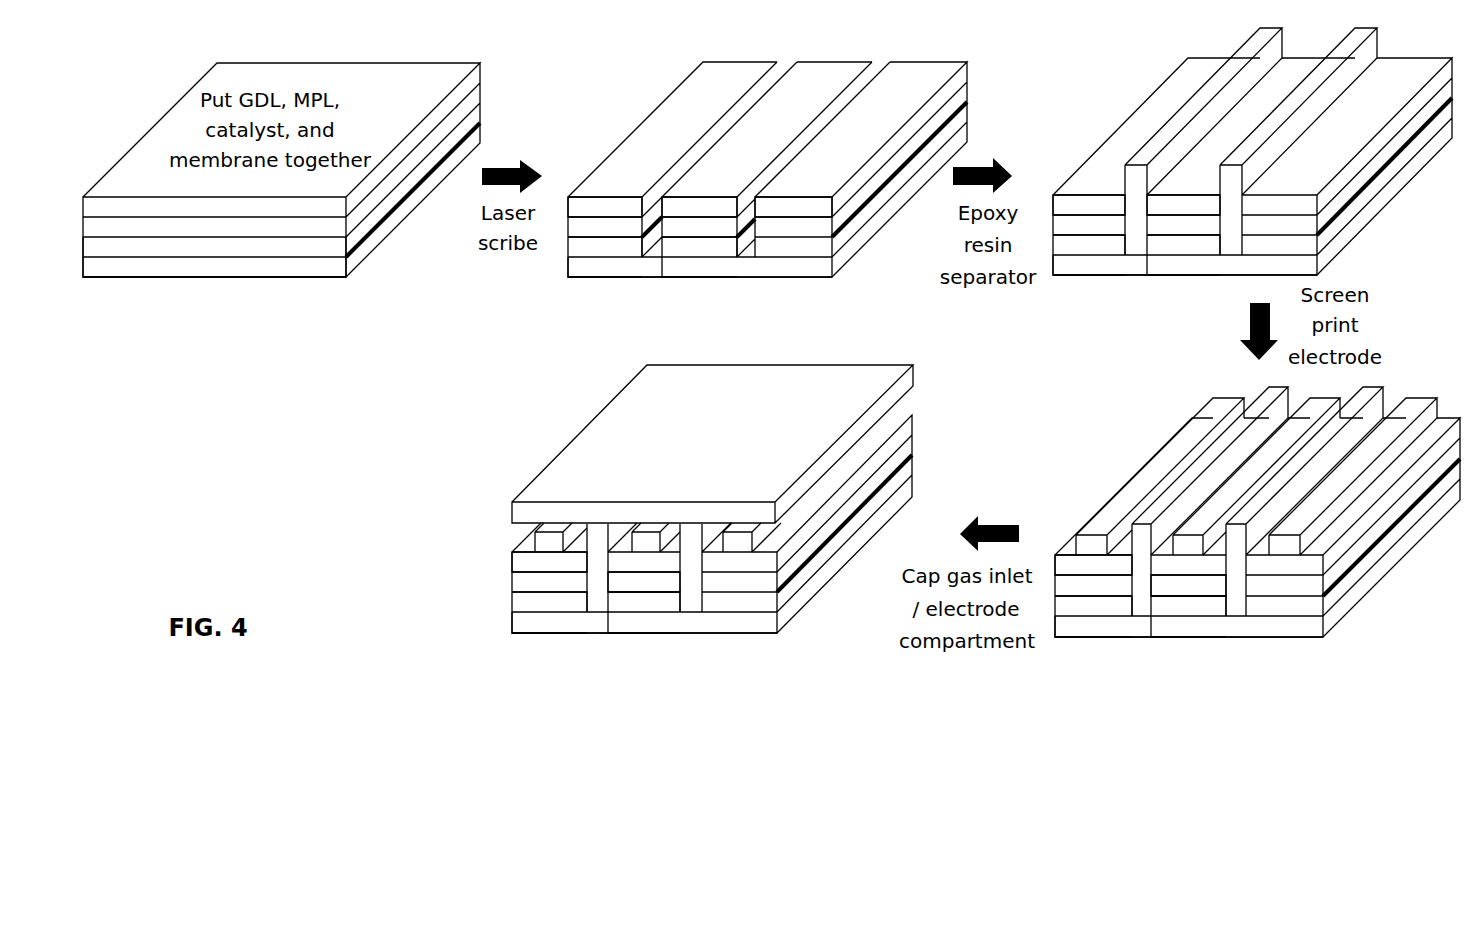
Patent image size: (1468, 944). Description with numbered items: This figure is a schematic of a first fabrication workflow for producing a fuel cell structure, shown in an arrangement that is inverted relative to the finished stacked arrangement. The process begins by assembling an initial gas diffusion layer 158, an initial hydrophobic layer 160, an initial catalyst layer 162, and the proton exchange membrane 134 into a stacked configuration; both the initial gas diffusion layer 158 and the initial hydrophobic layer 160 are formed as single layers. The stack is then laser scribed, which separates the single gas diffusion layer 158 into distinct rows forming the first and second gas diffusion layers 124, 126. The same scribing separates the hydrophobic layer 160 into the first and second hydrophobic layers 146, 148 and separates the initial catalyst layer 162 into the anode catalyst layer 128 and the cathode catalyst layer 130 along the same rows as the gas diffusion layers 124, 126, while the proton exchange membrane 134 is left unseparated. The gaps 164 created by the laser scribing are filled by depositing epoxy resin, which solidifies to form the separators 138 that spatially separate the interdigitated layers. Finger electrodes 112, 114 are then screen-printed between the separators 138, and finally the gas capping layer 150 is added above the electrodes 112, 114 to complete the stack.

The finger electrode 112 is at (1141, 487).
The finger electrode 114 is at (1241, 489).
The first gas diffusion layer 124 is at (617, 192).
The second gas diffusion layer 126 is at (707, 178).
The anode catalyst layer 128 is at (580, 258).
The cathode catalyst layer 130 is at (690, 258).
The proton exchange membrane 134 is at (297, 277).
The separator 138 is at (1205, 92).
The first hydrophobic layer 146 is at (612, 238).
The second hydrophobic layer 148 is at (722, 238).
The gas capping layer 150 is at (572, 467).
The initial gas diffusion layer 158 is at (118, 220).
The initial hydrophobic layer 160 is at (175, 238).
The initial catalyst layer 162 is at (238, 258).
The gap 164 is at (703, 140).